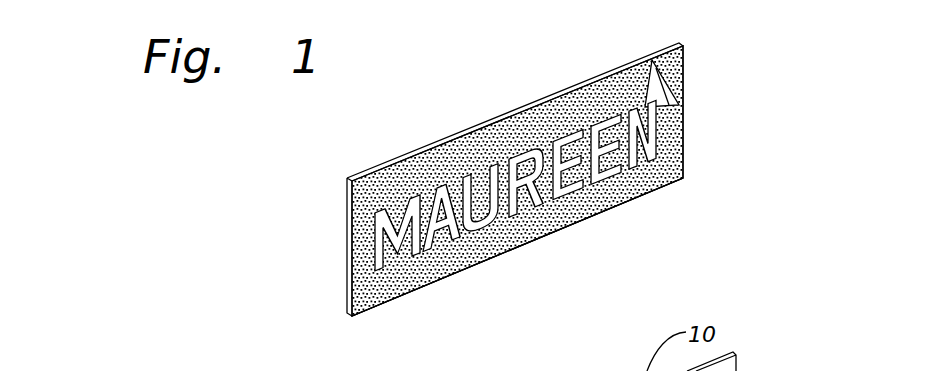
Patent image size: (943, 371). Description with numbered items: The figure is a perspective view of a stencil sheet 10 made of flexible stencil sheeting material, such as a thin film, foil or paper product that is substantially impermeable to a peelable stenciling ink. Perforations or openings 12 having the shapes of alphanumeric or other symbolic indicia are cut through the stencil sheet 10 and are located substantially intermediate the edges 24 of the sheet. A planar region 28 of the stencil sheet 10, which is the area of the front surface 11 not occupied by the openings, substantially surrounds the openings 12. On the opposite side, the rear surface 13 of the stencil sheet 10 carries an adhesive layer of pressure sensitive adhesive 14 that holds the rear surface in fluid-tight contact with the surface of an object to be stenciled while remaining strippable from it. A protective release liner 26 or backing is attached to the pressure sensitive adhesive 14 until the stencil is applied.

The stencil sheet 10 is at (520, 194).
The front surface of stencil sheet 11 is at (684, 170).
The openings through stencil sheet 12 is at (404, 202).
The rear surface of stencil sheet 13 is at (660, 92).
The pressure sensitive adhesive 14 is at (662, 86).
The edge of stencil sheet 24 is at (377, 300).
The release liner 26 is at (682, 53).
The planar region of stencil sheet 28 is at (528, 236).